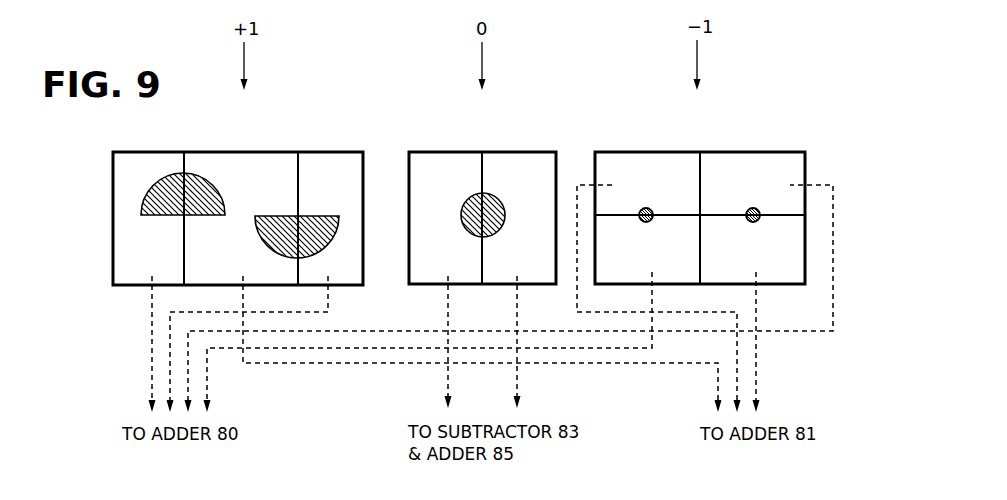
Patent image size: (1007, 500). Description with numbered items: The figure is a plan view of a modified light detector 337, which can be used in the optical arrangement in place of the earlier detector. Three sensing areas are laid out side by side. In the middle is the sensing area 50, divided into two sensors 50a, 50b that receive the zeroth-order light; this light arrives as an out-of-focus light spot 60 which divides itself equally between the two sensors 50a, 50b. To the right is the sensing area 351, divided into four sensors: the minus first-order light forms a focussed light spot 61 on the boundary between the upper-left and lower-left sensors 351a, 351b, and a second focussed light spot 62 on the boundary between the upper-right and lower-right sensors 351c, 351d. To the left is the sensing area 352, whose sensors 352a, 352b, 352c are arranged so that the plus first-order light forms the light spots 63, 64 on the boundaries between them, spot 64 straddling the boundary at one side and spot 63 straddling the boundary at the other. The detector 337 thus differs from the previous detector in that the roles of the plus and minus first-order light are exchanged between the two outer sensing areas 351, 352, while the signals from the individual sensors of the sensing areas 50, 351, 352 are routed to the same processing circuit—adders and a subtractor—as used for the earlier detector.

The light detector 337 is at (784, 83).
The sensing area 352 is at (291, 124).
The sensor 352a is at (330, 153).
The sensor 352b is at (147, 153).
The sensor 352c is at (243, 153).
The light spot 63 is at (280, 219).
The light spot 64 is at (162, 218).
The sensing area 50 is at (496, 135).
The sensor 50a is at (462, 266).
The sensor 50b is at (534, 266).
The out-of-focus light spot 60 is at (463, 212).
The sensing area 351 is at (717, 130).
The upper-left sensor 351a is at (646, 153).
The lower-left sensor 351b is at (671, 267).
The upper-right sensor 351c is at (751, 153).
The lower-right sensor 351d is at (777, 267).
The focussed light spot 61 is at (646, 207).
The focussed light spot 62 is at (753, 207).